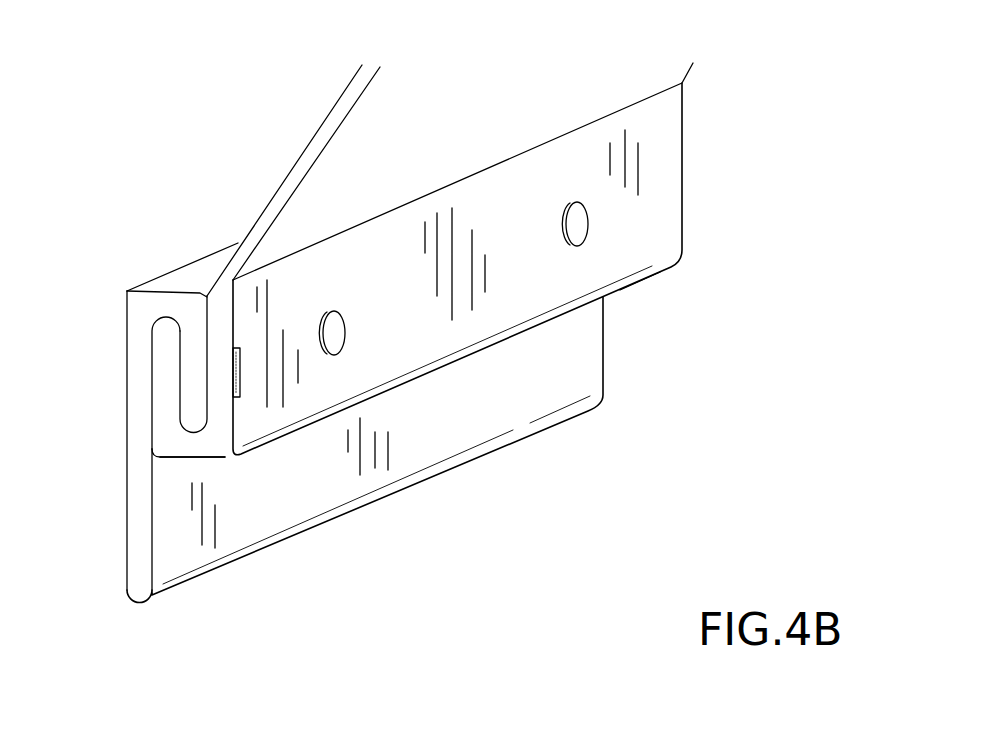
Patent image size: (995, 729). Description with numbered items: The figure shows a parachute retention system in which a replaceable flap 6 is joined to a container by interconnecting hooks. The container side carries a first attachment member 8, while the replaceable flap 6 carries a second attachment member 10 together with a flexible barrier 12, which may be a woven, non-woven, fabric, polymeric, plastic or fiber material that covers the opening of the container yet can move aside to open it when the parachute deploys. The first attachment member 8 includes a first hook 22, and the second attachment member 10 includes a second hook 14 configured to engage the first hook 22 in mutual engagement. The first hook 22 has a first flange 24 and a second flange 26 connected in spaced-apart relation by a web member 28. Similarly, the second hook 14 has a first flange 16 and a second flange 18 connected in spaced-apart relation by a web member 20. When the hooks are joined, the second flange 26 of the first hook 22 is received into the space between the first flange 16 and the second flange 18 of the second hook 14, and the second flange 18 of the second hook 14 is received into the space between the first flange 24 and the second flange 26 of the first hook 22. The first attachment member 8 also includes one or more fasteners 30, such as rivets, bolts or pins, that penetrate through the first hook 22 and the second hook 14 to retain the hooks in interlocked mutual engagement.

The replaceable flap 6 is at (283, 115).
The first attachment member 8 is at (406, 518).
The second attachment member 10 is at (722, 190).
The flexible barrier 12 is at (278, 203).
The second hook 14 is at (647, 294).
The first flange 16 is at (228, 318).
The second flange 18 is at (167, 415).
The web member 20 is at (192, 450).
The first hook 22 is at (160, 266).
The first flange 24 is at (140, 397).
The second flange 26 is at (192, 387).
The web member 28 is at (165, 312).
The fasteners 30 is at (337, 323).